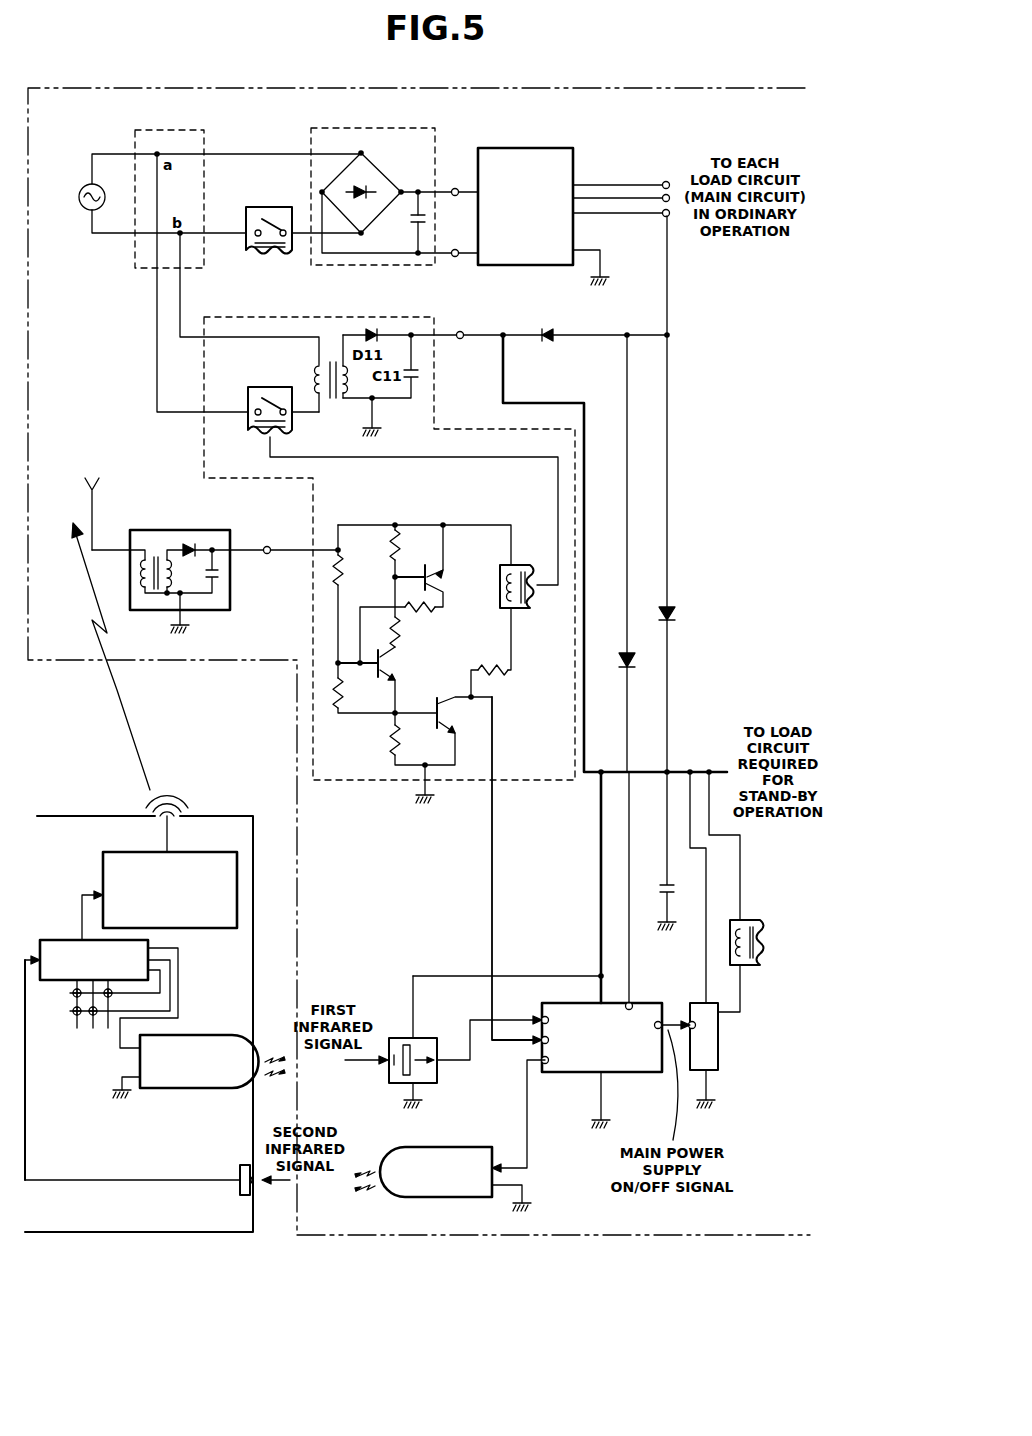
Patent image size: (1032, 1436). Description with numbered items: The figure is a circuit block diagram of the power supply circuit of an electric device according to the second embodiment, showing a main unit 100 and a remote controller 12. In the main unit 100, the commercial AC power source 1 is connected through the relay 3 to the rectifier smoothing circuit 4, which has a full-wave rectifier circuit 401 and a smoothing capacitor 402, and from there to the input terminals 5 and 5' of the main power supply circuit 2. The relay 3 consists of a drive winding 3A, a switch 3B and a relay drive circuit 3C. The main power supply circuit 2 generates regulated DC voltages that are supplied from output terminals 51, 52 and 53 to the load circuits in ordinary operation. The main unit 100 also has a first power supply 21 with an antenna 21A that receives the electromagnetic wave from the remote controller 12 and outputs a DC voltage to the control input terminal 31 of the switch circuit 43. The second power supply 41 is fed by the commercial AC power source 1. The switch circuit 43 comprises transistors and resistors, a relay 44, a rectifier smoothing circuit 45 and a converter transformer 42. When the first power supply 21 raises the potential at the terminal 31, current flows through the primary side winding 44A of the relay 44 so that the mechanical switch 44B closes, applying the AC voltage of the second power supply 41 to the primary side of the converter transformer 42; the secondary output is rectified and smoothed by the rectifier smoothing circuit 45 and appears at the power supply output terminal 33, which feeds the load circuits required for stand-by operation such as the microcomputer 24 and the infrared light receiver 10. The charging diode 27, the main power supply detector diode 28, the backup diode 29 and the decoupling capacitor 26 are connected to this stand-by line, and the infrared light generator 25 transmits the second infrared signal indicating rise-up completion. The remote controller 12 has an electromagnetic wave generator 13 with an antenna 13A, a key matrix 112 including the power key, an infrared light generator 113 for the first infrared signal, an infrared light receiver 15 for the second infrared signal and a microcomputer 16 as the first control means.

The main unit 100 is at (160, 88).
The commercial AC power source 1 is at (82, 191).
The second power supply 41 is at (135, 265).
The relay 3 is at (510, 595).
The relay switch 3B is at (268, 207).
The rectifier smoothing circuit 4 is at (310, 134).
The full-wave rectifier circuit 401 is at (385, 172).
The smoothing capacitor 402 is at (406, 217).
The input terminal 5 is at (456, 172).
The input terminal 5' is at (459, 235).
The main power supply circuit 2 is at (535, 148).
The output terminal 51 is at (664, 181).
The output terminal 52 is at (664, 200).
The output terminal 53 is at (665, 218).
The rectifier smoothing circuit 45 is at (393, 327).
The relay 44 is at (188, 400).
The mechanical switch 44B is at (268, 387).
The primary side winding 44A is at (523, 610).
The converter transformer 42 is at (332, 398).
The power supply output terminal 33 is at (460, 343).
The charging diode 27 is at (545, 326).
The antenna 21A is at (100, 491).
The first power supply 21 is at (152, 530).
The control input terminal 31 is at (267, 557).
The switch circuit 43 is at (448, 692).
The backup diode 29 is at (677, 614).
The main power supply detector diode 28 is at (636, 660).
The decoupling capacitor 26 is at (662, 851).
The drive winding 3A is at (727, 945).
The relay drive circuit 3C is at (722, 1059).
The microcomputer 24 is at (573, 1075).
The infrared light receiver 10 is at (399, 1037).
The infrared light generator 25 is at (430, 1147).
The remote controller 12 is at (209, 815).
The antenna 13A is at (158, 808).
The electromagnetic wave generator 13 is at (103, 880).
The microcomputer 16 is at (62, 940).
The key matrix 112 is at (88, 1030).
The infrared light generator 113 is at (202, 1035).
The infrared light receiver 15 is at (238, 1192).